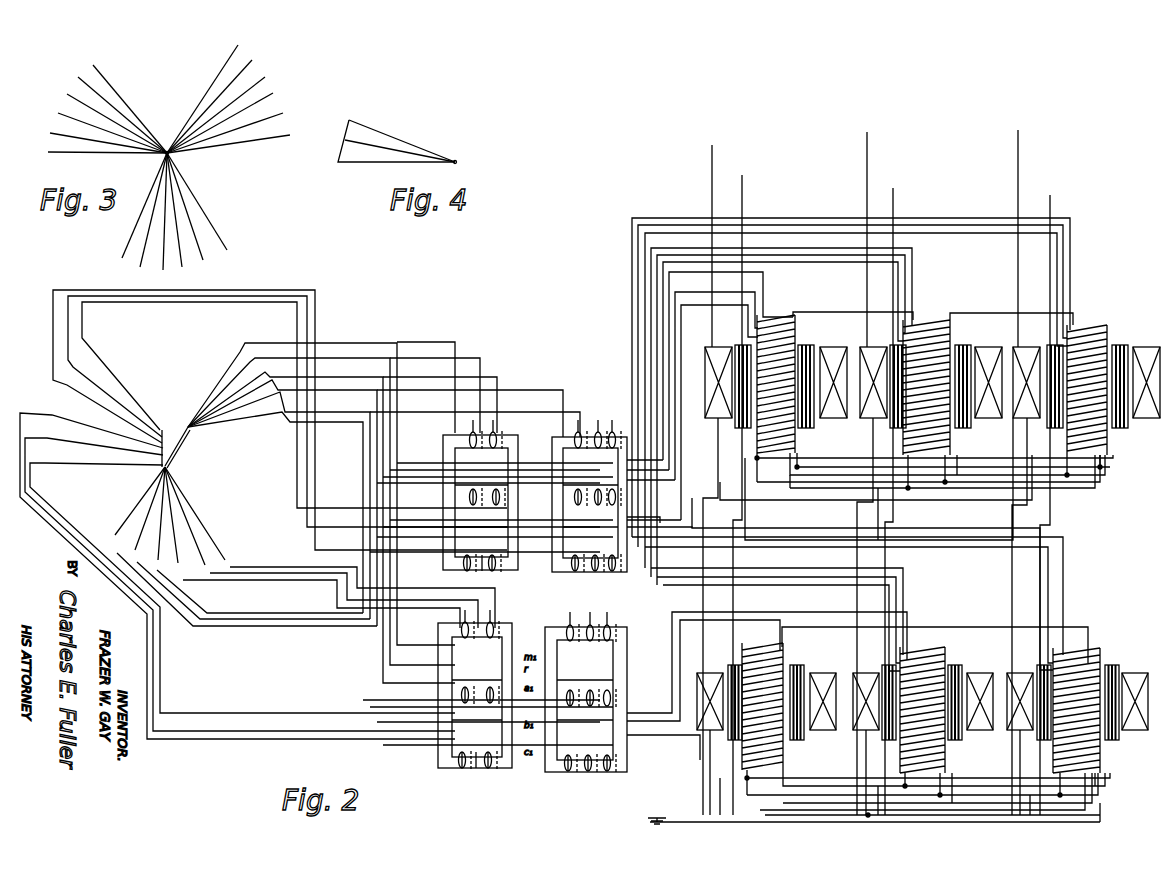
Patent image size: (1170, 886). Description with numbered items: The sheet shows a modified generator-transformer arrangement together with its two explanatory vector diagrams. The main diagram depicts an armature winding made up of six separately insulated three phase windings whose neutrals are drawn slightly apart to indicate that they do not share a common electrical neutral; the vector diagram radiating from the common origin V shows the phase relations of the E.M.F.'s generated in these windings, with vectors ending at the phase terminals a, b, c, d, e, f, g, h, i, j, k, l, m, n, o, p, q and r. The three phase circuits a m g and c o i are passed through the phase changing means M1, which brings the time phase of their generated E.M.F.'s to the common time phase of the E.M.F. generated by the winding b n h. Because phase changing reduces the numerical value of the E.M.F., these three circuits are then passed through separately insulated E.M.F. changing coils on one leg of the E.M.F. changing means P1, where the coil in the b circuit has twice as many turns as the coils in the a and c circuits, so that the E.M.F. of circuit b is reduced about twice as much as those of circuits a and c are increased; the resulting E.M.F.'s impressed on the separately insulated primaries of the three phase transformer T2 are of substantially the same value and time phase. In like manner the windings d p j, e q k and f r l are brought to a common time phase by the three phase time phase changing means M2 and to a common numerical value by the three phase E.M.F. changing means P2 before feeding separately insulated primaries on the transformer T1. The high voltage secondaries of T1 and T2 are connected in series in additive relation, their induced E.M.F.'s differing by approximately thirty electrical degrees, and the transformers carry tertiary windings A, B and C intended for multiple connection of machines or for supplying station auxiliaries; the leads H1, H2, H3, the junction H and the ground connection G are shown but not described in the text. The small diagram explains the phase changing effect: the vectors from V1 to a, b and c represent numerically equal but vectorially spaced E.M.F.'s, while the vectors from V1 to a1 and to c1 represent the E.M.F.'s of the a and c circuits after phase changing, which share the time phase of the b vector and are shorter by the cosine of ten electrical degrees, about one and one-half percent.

In FIG. 3, the common vector origin V is at (176, 160).
In FIG. 2, the common vector origin V is at (167, 462).
In FIG. 4, the vector origin V1 is at (466, 160).
In FIG. 3, the phase winding a is at (100, 153).
In FIG. 4, the phase winding a is at (389, 143).
In FIG. 2, the phase winding a is at (242, 586).
In FIG. 3, the phase winding b is at (102, 139).
In FIG. 4, the phase winding b is at (391, 145).
In FIG. 2, the phase winding b is at (240, 583).
In FIG. 3, the phase winding c is at (106, 129).
In FIG. 4, the phase winding c is at (394, 134).
In FIG. 2, the phase winding c is at (237, 581).
In FIG. 3, the phase winding d is at (111, 119).
In FIG. 2, the phase winding d is at (279, 420).
In FIG. 3, the phase winding e is at (117, 109).
In FIG. 2, the phase winding e is at (284, 414).
In FIG. 3, the phase winding f is at (125, 102).
In FIG. 2, the phase winding f is at (294, 429).
In FIG. 3, the phase winding g is at (202, 213).
In FIG. 2, the phase winding g is at (330, 547).
In FIG. 3, the phase winding h is at (189, 216).
In FIG. 2, the phase winding h is at (321, 547).
In FIG. 3, the phase winding i is at (176, 219).
In FIG. 2, the phase winding i is at (312, 526).
In FIG. 3, the phase winding j is at (161, 221).
In FIG. 2, the phase winding j is at (277, 496).
In FIG. 3, the phase winding k is at (149, 219).
In FIG. 2, the phase winding k is at (268, 510).
In FIG. 3, the phase winding l is at (139, 214).
In FIG. 2, the phase winding l is at (242, 546).
In FIG. 3, the phase winding m is at (207, 94).
In FIG. 2, the phase winding m is at (321, 493).
In FIG. 3, the phase winding n is at (213, 101).
In FIG. 2, the phase winding n is at (321, 509).
In FIG. 3, the phase winding o is at (218, 109).
In FIG. 2, the phase winding o is at (321, 525).
In FIG. 3, the phase winding p is at (224, 118).
In FIG. 2, the phase winding p is at (298, 499).
In FIG. 3, the phase winding q is at (229, 127).
In FIG. 2, the phase winding q is at (298, 502).
In FIG. 3, the phase winding r is at (230, 141).
In FIG. 2, the phase winding r is at (297, 511).
In FIG. 4, the vector end point a1 is at (349, 147).
In FIG. 4, the vector end point c1 is at (352, 134).
In FIG. 2, the three phase time phase changing means M2 is at (480, 481).
In FIG. 2, the three phase E.M.F. changing means P2 is at (589, 478).
In FIG. 2, the phase changing means M1 is at (475, 705).
In FIG. 2, the E.M.F. changing means P1 is at (586, 708).
In FIG. 2, the three phase transformer T1 is at (1103, 327).
In FIG. 2, the three phase transformer T2 is at (1097, 655).
In FIG. 2, the heater lead H1 is at (706, 233).
In FIG. 2, the heater lead H2 is at (868, 225).
In FIG. 2, the heater lead H3 is at (1021, 224).
In FIG. 2, the tertiary winding A is at (739, 486).
In FIG. 2, the tertiary winding B is at (891, 490).
In FIG. 2, the tertiary winding C is at (1047, 493).
In FIG. 2, the ground connection G is at (864, 818).
In FIG. 2, the junction H is at (866, 825).